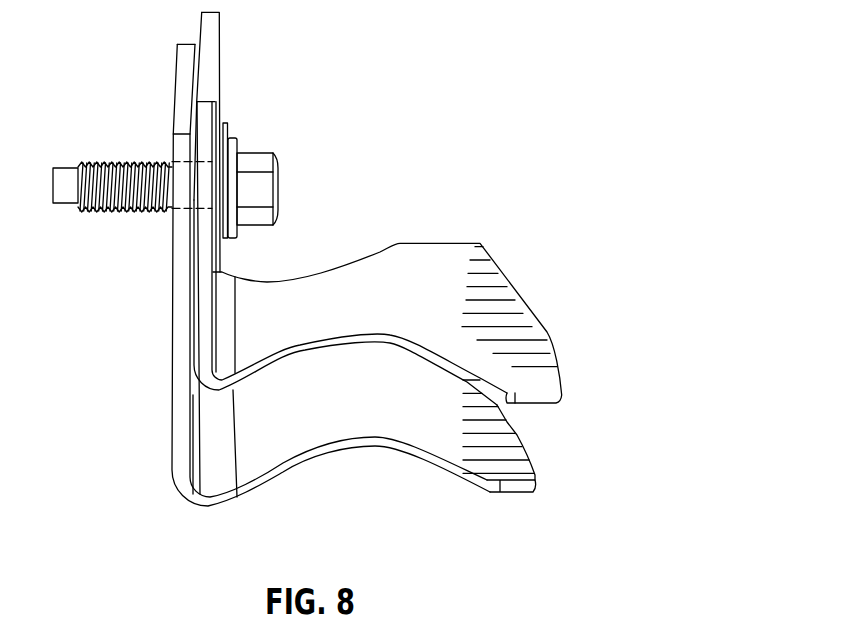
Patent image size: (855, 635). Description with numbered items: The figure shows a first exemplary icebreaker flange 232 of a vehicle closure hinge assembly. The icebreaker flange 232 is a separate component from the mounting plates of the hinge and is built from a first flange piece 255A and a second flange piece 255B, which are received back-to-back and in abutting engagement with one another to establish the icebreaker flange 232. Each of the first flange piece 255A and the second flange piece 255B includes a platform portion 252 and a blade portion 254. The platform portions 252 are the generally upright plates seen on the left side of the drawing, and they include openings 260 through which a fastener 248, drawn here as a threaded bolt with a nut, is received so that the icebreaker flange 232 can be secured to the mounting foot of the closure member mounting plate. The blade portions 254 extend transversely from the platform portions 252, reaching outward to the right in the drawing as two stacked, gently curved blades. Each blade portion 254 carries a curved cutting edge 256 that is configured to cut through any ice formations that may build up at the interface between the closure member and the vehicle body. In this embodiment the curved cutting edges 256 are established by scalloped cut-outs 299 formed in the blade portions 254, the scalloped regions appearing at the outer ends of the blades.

The icebreaker flange 232 is at (324, 165).
The fastener 248 is at (258, 163).
The platform portion 252 is at (220, 269).
The blade portion 254 is at (420, 268).
The first flange piece 255A is at (170, 446).
The second flange piece 255B is at (231, 80).
The curved cutting edge 256 is at (353, 264).
The openings 260 is at (202, 183).
The scalloped cut-outs 299 is at (334, 266).